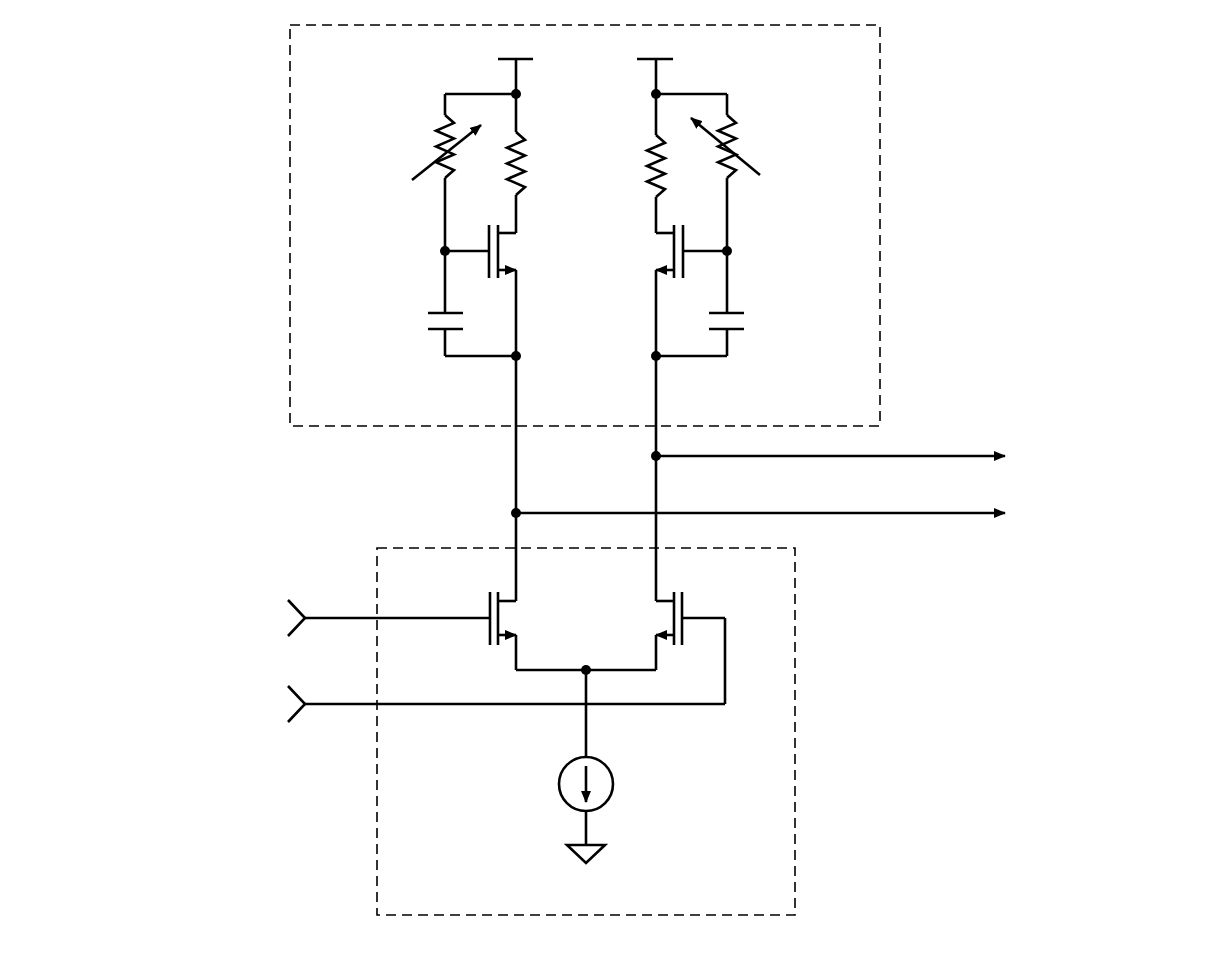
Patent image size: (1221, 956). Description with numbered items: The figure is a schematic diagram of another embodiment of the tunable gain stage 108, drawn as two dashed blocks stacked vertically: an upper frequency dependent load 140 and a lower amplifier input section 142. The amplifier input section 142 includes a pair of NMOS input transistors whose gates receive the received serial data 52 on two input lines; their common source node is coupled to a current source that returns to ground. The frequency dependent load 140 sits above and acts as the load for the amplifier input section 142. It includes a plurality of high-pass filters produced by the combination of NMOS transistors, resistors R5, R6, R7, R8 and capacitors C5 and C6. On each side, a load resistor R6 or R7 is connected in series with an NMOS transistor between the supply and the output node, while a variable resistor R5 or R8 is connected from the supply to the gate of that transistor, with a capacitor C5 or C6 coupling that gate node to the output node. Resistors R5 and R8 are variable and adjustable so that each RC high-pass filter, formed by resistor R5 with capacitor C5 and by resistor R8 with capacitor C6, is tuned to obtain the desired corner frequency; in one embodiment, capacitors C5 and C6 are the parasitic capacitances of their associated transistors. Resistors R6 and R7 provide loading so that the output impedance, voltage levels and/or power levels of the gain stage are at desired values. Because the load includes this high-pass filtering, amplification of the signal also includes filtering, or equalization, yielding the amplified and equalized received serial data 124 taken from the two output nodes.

The tunable gain stage 108 is at (1072, 893).
The frequency dependent load 140 is at (585, 313).
The amplifier input section 142 is at (586, 731).
The amplified and equalized received serial data 124 is at (836, 478).
The received serial data 52 is at (406, 661).
The variable resistor R5 is at (437, 147).
The resistor R6 is at (539, 163).
The resistor R7 is at (638, 166).
The variable resistor R8 is at (735, 146).
The capacitor C5 is at (427, 322).
The capacitor C6 is at (745, 322).